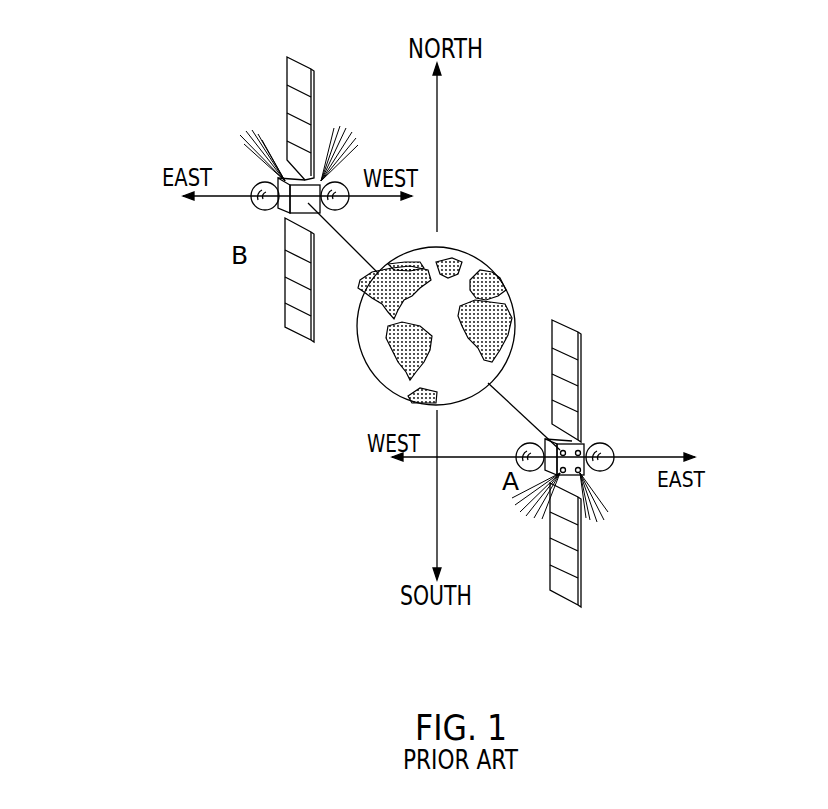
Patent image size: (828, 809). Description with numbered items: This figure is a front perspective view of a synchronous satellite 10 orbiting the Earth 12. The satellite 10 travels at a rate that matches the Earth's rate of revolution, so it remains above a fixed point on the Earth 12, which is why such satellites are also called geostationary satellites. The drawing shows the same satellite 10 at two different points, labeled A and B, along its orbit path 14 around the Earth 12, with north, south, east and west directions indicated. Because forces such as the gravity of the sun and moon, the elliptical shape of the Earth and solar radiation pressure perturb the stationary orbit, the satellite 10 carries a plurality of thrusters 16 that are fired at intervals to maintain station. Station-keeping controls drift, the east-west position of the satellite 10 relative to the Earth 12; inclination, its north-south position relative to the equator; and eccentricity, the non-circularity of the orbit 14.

The synchronous satellite 10 is at (104, 150).
The Earth 12 is at (478, 252).
The orbit path 14 is at (706, 232).
The thrusters 16 is at (567, 446).